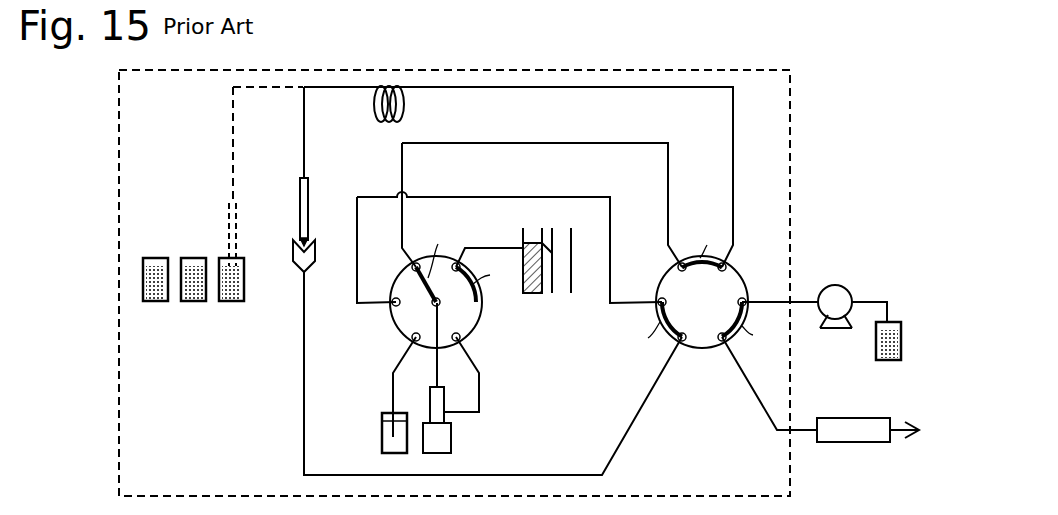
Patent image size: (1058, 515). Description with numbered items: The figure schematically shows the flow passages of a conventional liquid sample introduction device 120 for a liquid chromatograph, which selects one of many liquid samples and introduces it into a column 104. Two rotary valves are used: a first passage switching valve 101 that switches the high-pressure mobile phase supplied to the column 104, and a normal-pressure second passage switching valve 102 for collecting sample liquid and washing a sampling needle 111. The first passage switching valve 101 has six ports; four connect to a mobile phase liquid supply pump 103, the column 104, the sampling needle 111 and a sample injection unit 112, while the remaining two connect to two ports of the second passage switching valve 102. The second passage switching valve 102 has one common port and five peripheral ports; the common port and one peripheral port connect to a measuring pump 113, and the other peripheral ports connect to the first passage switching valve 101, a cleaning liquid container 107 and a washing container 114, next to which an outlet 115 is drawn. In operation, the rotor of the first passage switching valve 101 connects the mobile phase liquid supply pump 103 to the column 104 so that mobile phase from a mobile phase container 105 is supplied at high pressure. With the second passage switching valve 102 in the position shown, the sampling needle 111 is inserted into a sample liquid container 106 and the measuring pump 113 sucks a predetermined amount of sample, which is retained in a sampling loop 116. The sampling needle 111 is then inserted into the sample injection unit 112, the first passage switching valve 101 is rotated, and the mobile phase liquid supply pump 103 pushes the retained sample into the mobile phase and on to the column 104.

The first passage switching valve 101 is at (745, 279).
The second passage switching valve 102 is at (480, 326).
The mobile phase liquid supply pump 103 is at (852, 290).
The column 104 is at (860, 418).
The mobile phase container 105 is at (876, 350).
The sample liquid container 106 is at (232, 302).
The cleaning liquid container 107 is at (382, 428).
The sampling needle 111 is at (236, 220).
The sample injection unit 112 is at (308, 272).
The measuring pump 113 is at (452, 445).
The washing container 114 is at (522, 237).
The detector outlet 115 is at (573, 256).
The sampling loop 116 is at (405, 112).
The liquid sample introduction device 120 is at (793, 115).